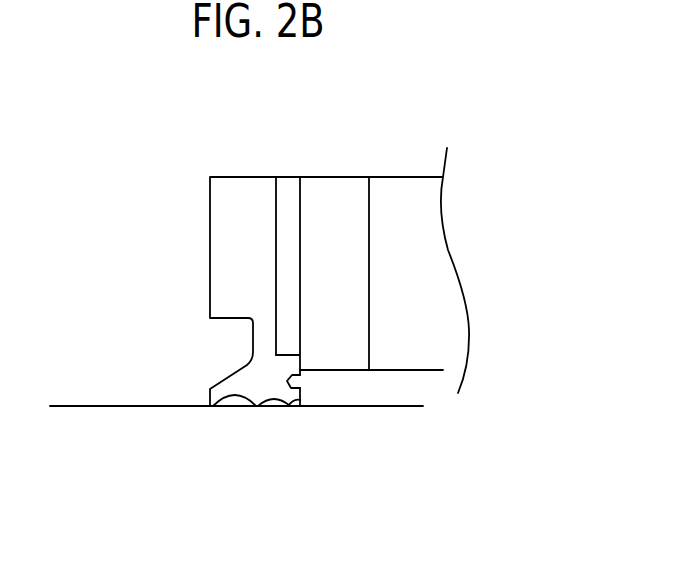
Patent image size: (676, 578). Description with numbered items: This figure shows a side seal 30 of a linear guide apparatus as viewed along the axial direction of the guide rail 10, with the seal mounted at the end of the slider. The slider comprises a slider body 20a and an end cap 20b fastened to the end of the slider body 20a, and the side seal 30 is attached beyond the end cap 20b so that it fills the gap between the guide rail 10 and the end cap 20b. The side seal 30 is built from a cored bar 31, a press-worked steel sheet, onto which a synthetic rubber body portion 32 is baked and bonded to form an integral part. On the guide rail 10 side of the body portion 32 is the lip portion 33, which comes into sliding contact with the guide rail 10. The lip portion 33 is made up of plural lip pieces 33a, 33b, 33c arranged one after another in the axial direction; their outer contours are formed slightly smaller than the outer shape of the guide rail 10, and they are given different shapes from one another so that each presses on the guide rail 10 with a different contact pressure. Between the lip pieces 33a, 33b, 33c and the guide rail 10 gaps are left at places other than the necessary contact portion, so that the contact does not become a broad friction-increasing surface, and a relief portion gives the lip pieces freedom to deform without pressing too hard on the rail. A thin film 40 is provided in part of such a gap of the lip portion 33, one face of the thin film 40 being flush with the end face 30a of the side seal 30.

The guide rail 10 is at (87, 405).
The slider body 20a is at (409, 188).
The end cap 20b is at (334, 188).
The side seal 30 is at (190, 158).
The end face 30a is at (222, 245).
The cored bar 31 is at (289, 188).
The body portion 32 is at (245, 188).
The lip portion 33 is at (235, 368).
The lip piece 33a is at (212, 403).
The lip piece 33b is at (254, 403).
The lip piece 33c is at (285, 403).
The thin film 40 is at (296, 382).